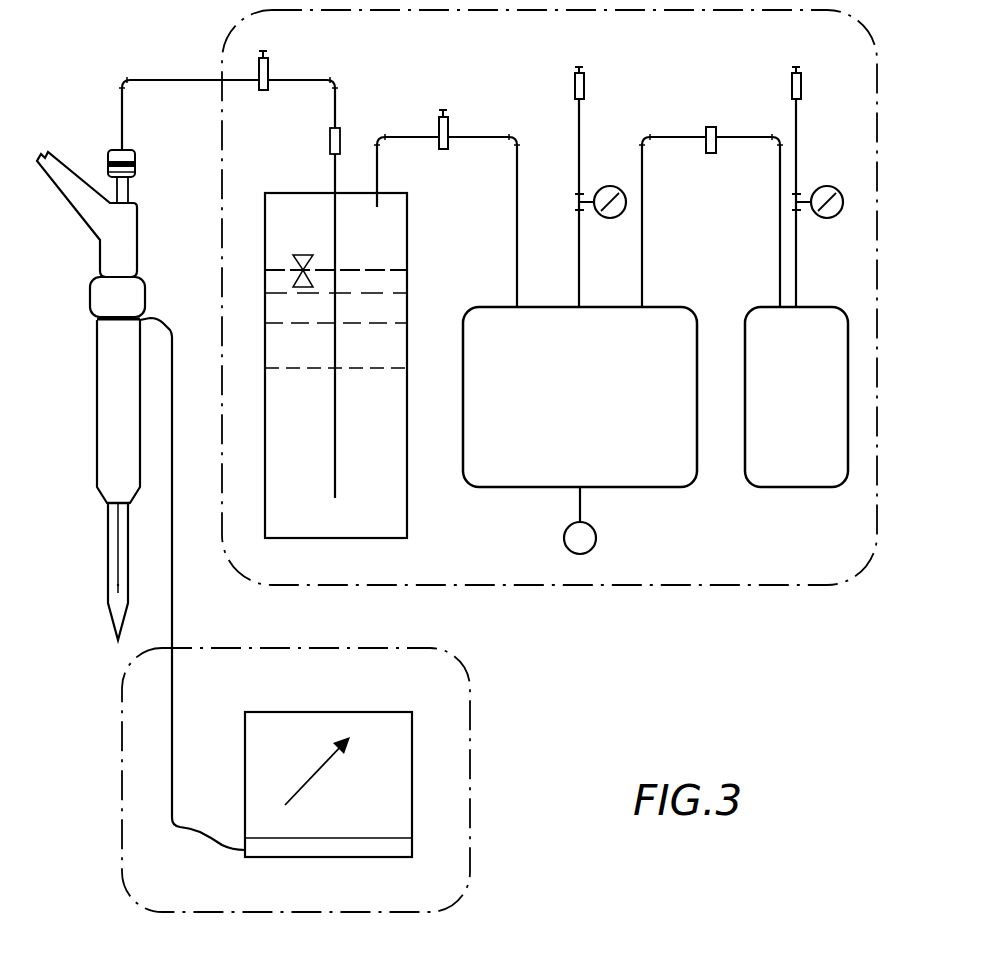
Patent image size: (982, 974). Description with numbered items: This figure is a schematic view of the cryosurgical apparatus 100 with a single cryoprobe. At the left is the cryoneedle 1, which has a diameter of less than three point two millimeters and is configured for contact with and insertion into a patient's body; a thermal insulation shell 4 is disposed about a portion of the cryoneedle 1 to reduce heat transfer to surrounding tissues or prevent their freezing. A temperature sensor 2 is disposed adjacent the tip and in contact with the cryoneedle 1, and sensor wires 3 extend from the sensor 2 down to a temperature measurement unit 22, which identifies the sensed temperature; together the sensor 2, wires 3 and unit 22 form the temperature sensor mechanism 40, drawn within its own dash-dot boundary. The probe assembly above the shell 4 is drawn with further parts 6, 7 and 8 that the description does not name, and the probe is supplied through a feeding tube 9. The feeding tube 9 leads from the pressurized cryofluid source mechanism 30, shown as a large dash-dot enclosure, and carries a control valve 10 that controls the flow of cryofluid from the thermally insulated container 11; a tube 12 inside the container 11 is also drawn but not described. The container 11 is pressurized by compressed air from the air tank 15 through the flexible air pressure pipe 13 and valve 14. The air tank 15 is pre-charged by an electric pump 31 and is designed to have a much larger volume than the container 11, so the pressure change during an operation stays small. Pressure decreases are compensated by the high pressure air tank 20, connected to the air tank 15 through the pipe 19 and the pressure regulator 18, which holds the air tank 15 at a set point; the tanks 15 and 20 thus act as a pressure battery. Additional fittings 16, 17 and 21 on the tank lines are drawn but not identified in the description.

The cryoneedle 1 is at (129, 590).
The temperature sensor 2 is at (118, 570).
The sensor wires 3 is at (172, 738).
The thermal insulation shell 4 is at (97, 409).
The connector 6 is at (146, 297).
The probe handle with exhaust arm 7 is at (138, 231).
The supply fitting 8 is at (136, 162).
The feeding tube 9 is at (178, 79).
The control valve 10 is at (269, 64).
The container 11 is at (408, 485).
The supply tube 12 is at (336, 420).
The flexible air pressure pipe 13 is at (402, 136).
The valve 14 is at (449, 126).
The air tank 15 is at (534, 488).
The valve 16 is at (585, 80).
The pressure gauge 17 is at (612, 186).
The pressure regulator 18 is at (709, 126).
The pipe 19 is at (750, 136).
The high pressure air tank 20 is at (796, 488).
The valve 21 is at (802, 81).
The temperature measurement unit 22 is at (413, 736).
The pressurized cryofluid source mechanism 30 is at (635, 586).
The pump 31 is at (597, 538).
The temperature sensor mechanism 40 is at (471, 790).
The apparatus for cryosurgery 100 is at (596, 634).